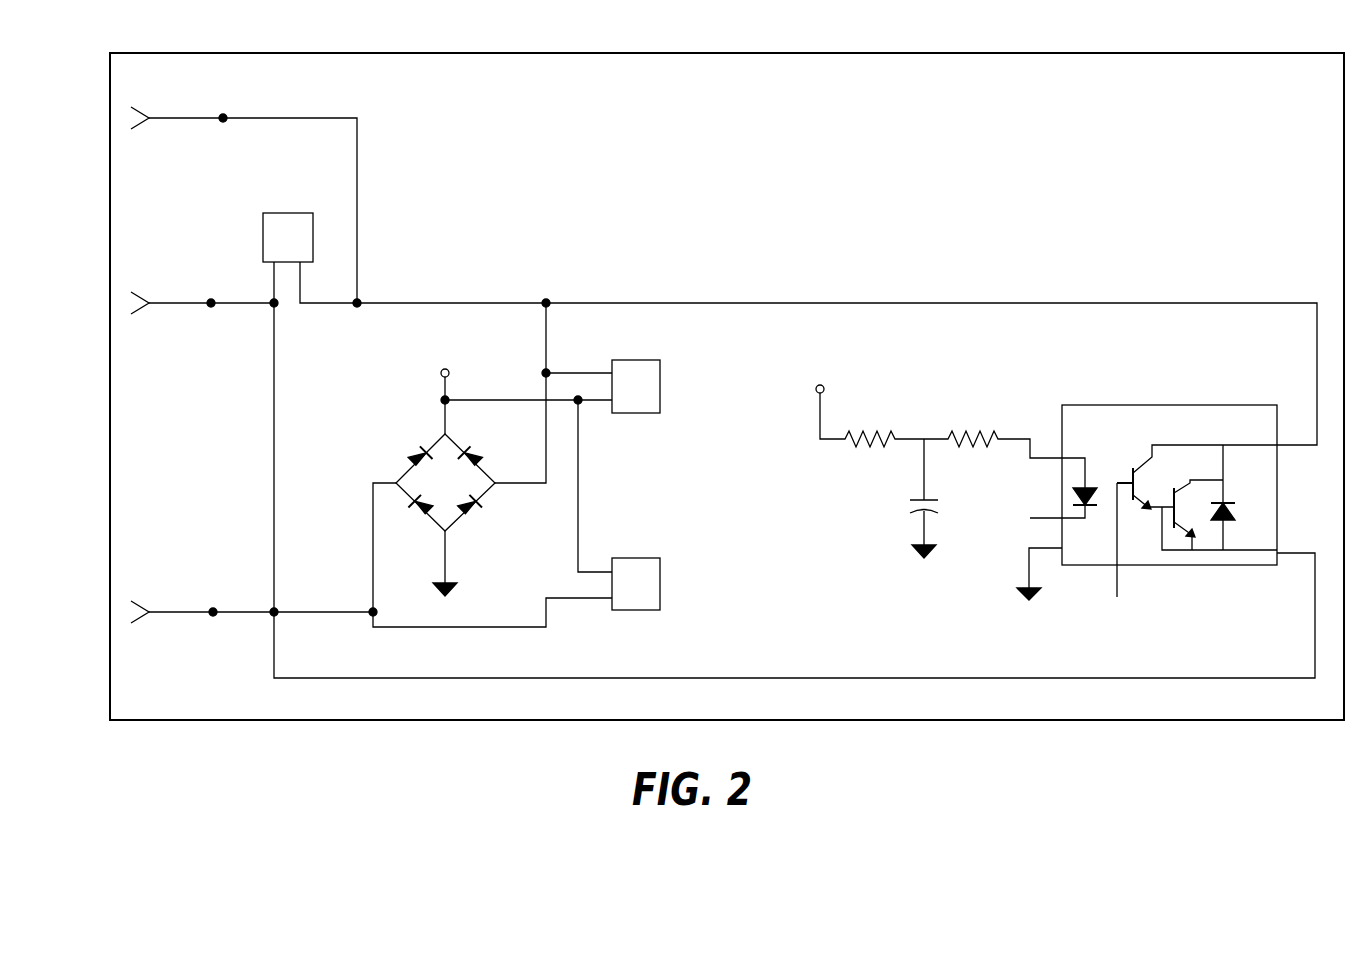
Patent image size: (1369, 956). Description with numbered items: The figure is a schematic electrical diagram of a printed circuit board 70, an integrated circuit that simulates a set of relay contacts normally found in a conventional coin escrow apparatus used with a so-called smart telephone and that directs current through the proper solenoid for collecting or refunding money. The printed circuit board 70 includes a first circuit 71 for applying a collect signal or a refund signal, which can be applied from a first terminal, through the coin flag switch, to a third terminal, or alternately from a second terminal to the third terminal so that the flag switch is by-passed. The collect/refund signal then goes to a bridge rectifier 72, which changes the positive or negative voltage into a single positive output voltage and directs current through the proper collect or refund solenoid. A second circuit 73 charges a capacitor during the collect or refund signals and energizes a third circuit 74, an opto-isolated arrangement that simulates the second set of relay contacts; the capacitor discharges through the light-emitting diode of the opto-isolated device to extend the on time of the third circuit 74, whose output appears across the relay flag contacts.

The printed circuit board 70 is at (594, 36).
The first circuit 71 is at (92, 85).
The bridge rectifier 72 is at (386, 436).
The second circuit 73 is at (855, 532).
The third circuit 74 is at (1066, 333).